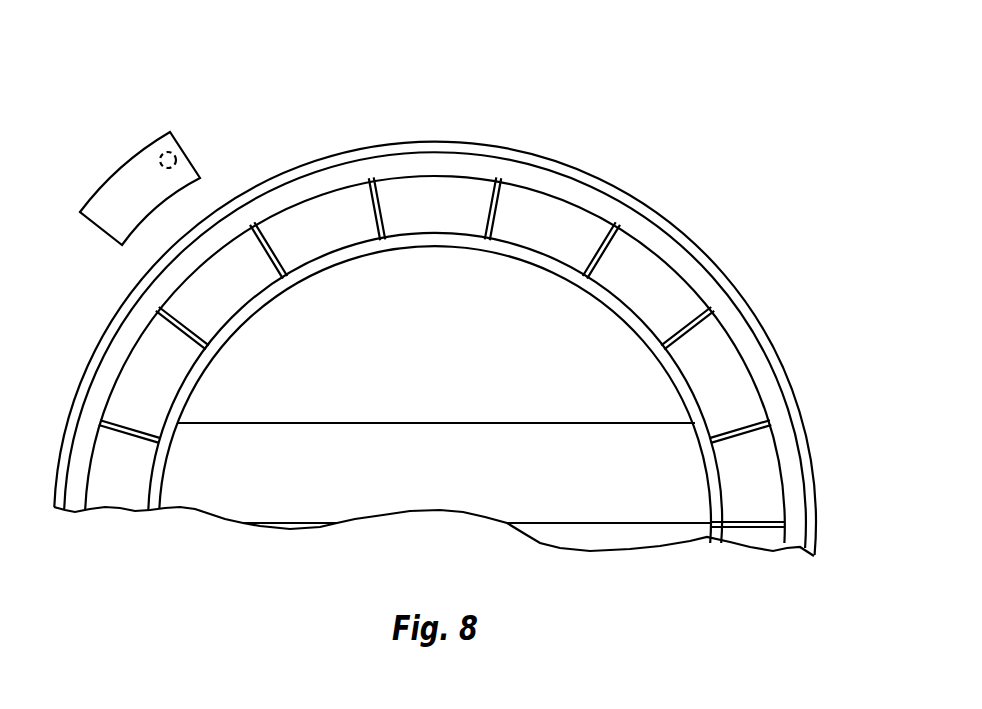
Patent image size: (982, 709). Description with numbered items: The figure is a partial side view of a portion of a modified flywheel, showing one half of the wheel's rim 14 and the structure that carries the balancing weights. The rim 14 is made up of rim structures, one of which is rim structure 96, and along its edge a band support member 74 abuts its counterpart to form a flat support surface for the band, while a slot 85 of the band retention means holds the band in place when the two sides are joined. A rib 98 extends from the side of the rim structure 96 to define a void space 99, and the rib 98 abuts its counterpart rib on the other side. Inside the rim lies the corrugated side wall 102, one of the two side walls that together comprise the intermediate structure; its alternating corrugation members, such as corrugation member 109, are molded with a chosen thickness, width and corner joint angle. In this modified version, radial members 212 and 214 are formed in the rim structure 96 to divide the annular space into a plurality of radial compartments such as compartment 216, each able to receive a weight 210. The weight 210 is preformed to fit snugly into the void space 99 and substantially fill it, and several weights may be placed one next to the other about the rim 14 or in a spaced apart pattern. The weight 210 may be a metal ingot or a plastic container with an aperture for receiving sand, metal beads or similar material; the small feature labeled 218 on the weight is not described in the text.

The rim 14 is at (642, 280).
The band support member 74 is at (783, 530).
The slot 85 is at (790, 512).
The rim structure 96 is at (118, 517).
The rib 98 is at (707, 530).
The void space 99 is at (757, 523).
The side wall 102 is at (453, 364).
The corrugation member 109 is at (292, 470).
The weight 210 is at (133, 193).
The radial member 212 is at (693, 328).
The radial member 214 is at (737, 420).
The compartment 216 is at (217, 292).
The locating hole 218 is at (172, 155).